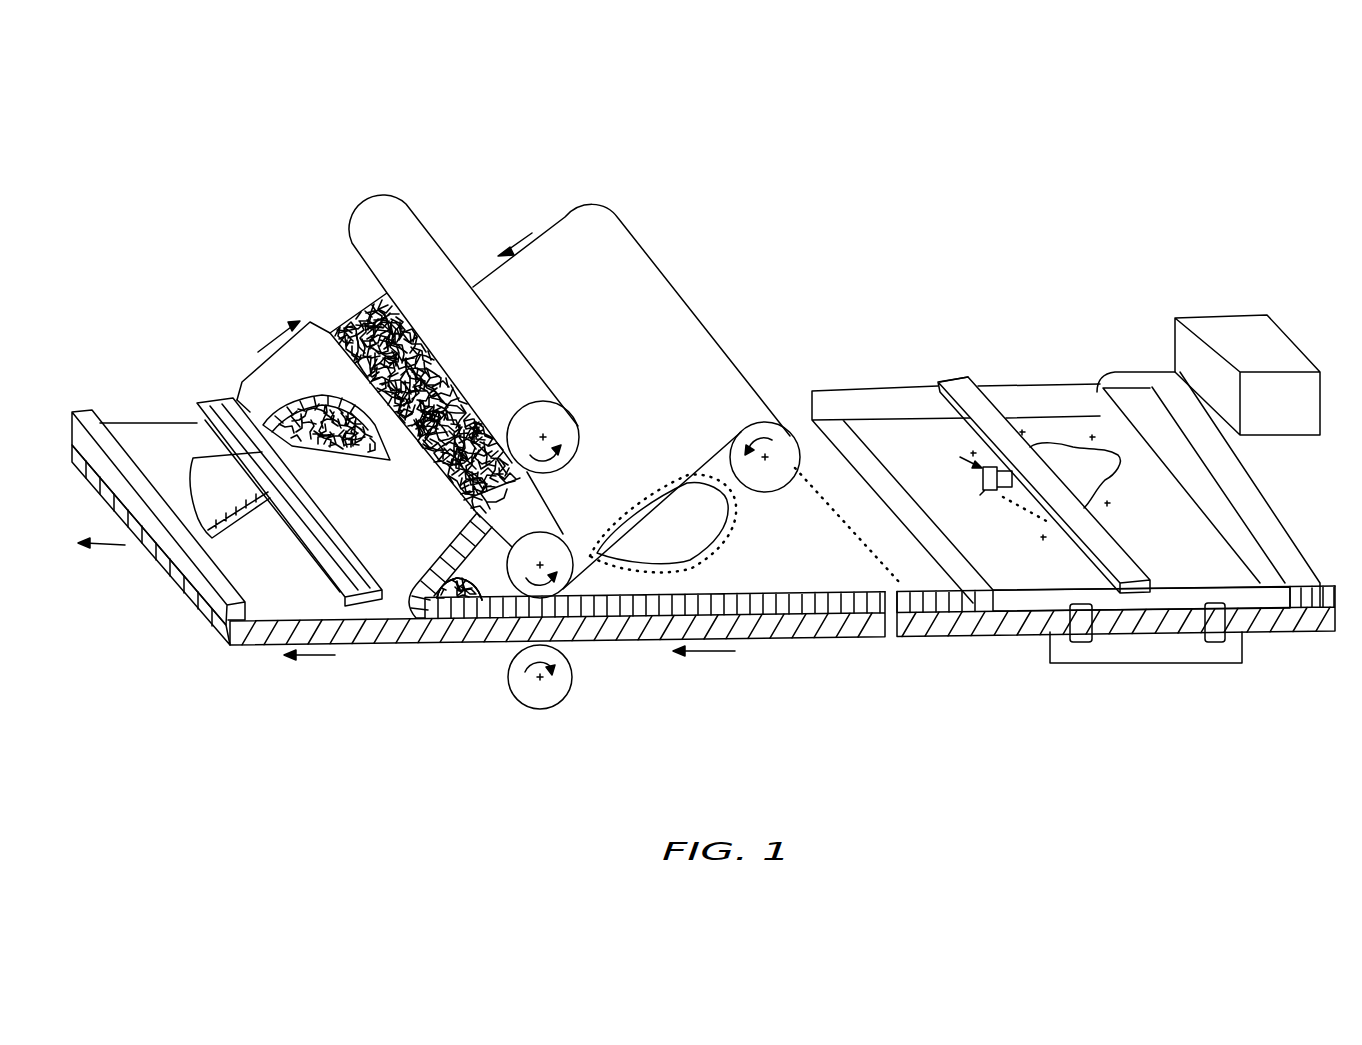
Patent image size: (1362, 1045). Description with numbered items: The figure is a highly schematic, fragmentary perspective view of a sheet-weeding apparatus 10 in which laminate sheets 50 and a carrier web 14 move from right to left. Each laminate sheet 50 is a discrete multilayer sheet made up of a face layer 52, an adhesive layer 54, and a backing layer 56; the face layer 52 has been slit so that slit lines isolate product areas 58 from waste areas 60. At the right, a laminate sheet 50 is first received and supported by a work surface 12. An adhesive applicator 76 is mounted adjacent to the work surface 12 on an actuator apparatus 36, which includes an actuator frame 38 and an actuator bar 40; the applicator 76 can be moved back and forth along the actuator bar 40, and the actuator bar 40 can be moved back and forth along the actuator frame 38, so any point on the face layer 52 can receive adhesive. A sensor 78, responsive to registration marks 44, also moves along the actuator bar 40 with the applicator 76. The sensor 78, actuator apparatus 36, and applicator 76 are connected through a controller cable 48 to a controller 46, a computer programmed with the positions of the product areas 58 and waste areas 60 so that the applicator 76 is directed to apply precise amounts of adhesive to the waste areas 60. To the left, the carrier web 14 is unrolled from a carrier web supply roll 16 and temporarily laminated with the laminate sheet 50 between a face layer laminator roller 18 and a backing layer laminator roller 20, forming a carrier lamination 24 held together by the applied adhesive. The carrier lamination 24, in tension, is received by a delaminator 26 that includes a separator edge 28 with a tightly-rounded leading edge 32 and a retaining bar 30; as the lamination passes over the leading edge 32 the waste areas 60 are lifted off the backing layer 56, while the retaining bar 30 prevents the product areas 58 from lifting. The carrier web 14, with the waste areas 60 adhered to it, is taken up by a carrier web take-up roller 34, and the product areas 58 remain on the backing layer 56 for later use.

The sheet-weeding apparatus 10 is at (287, 304).
The work surface 12 is at (1198, 648).
The carrier web 14 is at (573, 280).
The carrier web supply roll 16 is at (778, 433).
The face layer laminator roller 18 is at (552, 588).
The backing layer laminator roller 20 is at (572, 685).
The carrier lamination 24 is at (470, 600).
The delaminator 26 is at (448, 600).
The separator edge 28 is at (459, 589).
The retaining bar 30 is at (373, 622).
The leading edge 32 is at (418, 652).
The carrier web take-up roller 34 is at (425, 262).
The actuator apparatus 36 is at (1005, 368).
The actuator frame 38 is at (907, 387).
The actuator bar 40 is at (962, 380).
The registration marks 44 is at (1043, 545).
The controller 46 is at (1188, 343).
The controller cable 48 is at (1138, 373).
The laminate sheet 50 is at (742, 613).
The face layer 52 is at (748, 600).
The adhesive layer 54 is at (827, 592).
The backing layer 56 is at (268, 580).
The product areas 58 is at (203, 477).
The waste areas 60 is at (302, 353).
The adhesive applicator 76 is at (983, 467).
The sensor 78 is at (1000, 495).